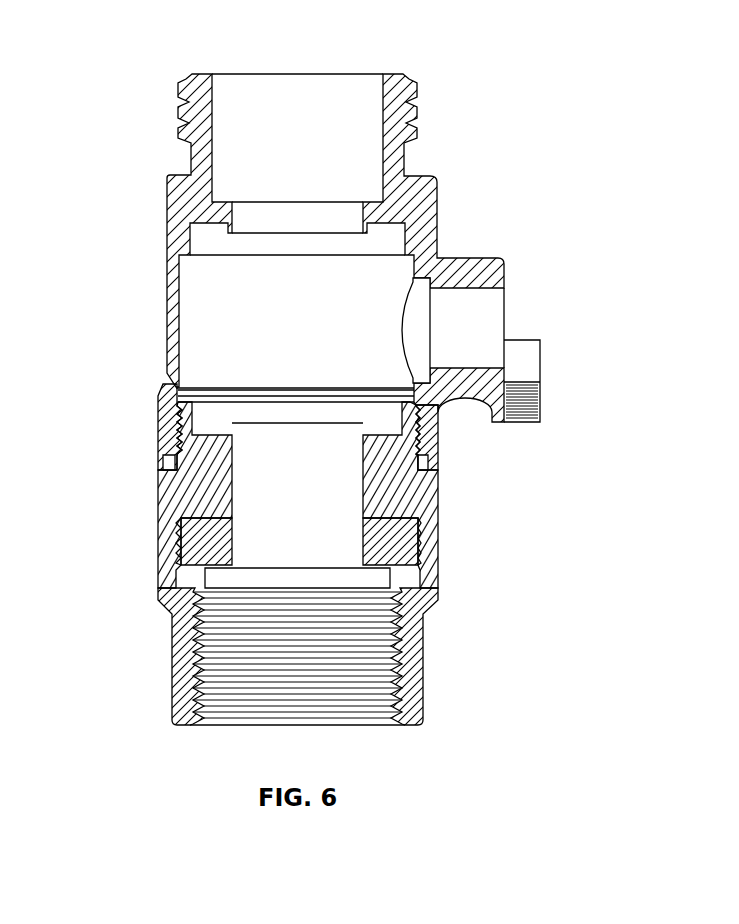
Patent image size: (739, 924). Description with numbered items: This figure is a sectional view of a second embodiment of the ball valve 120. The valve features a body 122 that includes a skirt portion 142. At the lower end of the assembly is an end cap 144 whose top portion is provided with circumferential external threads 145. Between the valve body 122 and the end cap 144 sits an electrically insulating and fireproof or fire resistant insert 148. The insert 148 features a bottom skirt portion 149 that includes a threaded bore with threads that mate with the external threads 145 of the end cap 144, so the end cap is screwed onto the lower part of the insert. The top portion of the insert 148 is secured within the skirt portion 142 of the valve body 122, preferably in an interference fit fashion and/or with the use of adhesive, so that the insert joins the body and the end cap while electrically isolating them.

The ball valve 120 is at (481, 57).
The valve body 122 is at (167, 228).
The skirt portion 142 is at (158, 440).
The end cap 144 is at (170, 673).
The external threads 145 is at (418, 545).
The insert 148 is at (158, 496).
The bottom skirt portion 149 is at (158, 572).